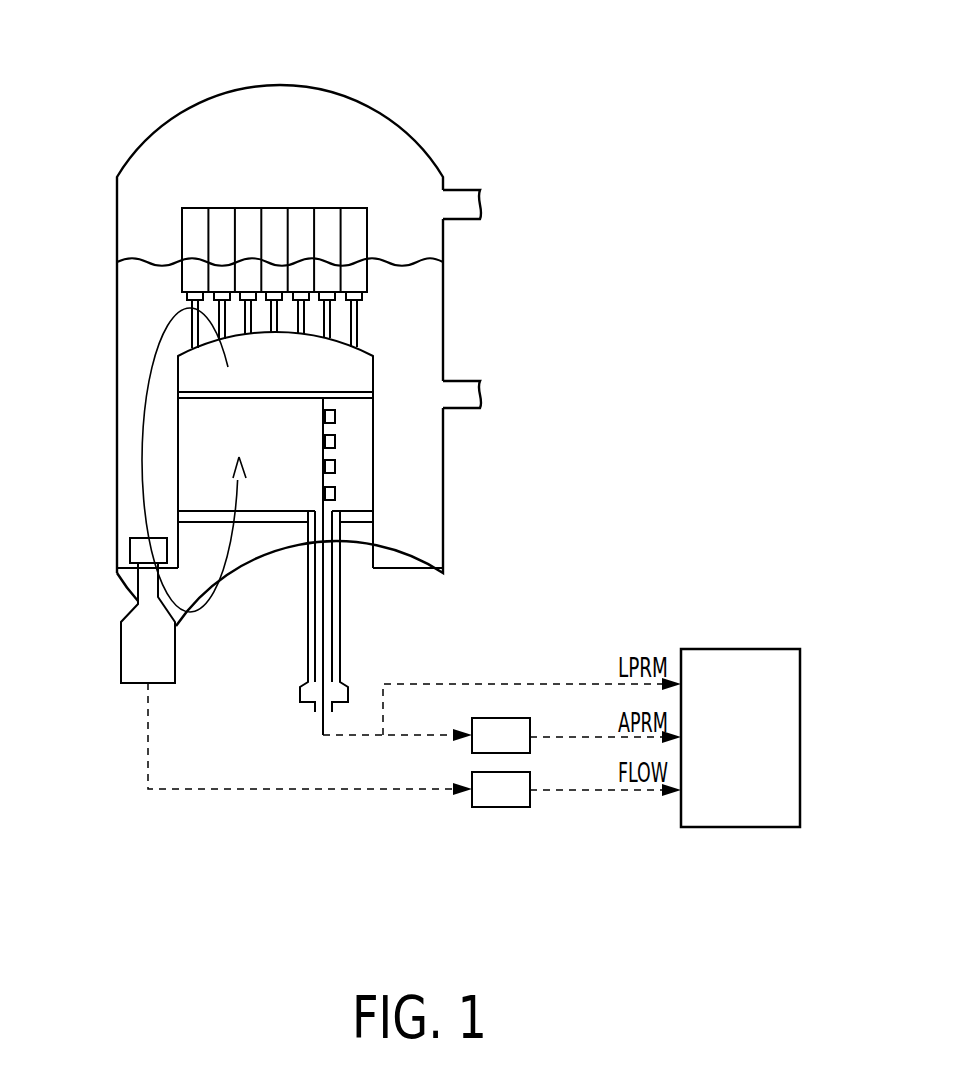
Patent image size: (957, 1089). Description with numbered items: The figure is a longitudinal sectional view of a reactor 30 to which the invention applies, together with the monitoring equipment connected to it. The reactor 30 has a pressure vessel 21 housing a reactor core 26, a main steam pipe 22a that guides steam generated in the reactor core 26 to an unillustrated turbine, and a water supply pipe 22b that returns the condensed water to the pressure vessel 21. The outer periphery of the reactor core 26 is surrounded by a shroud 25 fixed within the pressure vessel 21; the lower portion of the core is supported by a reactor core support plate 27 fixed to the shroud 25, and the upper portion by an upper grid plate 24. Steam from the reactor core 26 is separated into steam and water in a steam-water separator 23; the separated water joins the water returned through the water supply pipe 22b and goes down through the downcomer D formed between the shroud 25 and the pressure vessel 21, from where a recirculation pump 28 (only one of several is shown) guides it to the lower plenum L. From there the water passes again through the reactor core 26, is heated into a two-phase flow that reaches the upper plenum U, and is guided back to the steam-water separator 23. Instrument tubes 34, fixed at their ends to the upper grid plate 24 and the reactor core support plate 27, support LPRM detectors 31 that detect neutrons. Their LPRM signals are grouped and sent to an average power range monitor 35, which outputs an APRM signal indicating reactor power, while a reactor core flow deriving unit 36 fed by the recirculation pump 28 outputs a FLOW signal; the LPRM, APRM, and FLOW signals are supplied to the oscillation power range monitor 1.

The oscillation power range monitor 1 is at (753, 647).
The pressure vessel 21 is at (128, 156).
The main steam pipe 22a is at (467, 190).
The water supply pipe 22b is at (465, 380).
The steam-water separator 23 is at (182, 242).
The upper grid plate 24 is at (178, 388).
The shroud 25 is at (177, 448).
The reactor core 26 is at (187, 482).
The reactor core support plate 27 is at (197, 512).
The recirculation pump 28 is at (127, 637).
The reactor 30 is at (144, 101).
The LPRM detectors 31 is at (325, 493).
The instrument tubes 34 is at (330, 480).
The average power range monitor 35 is at (472, 722).
The reactor core flow deriving unit 36 is at (472, 772).
The upper plenum U is at (340, 323).
The downcomer D is at (417, 455).
The lower plenum L is at (425, 587).